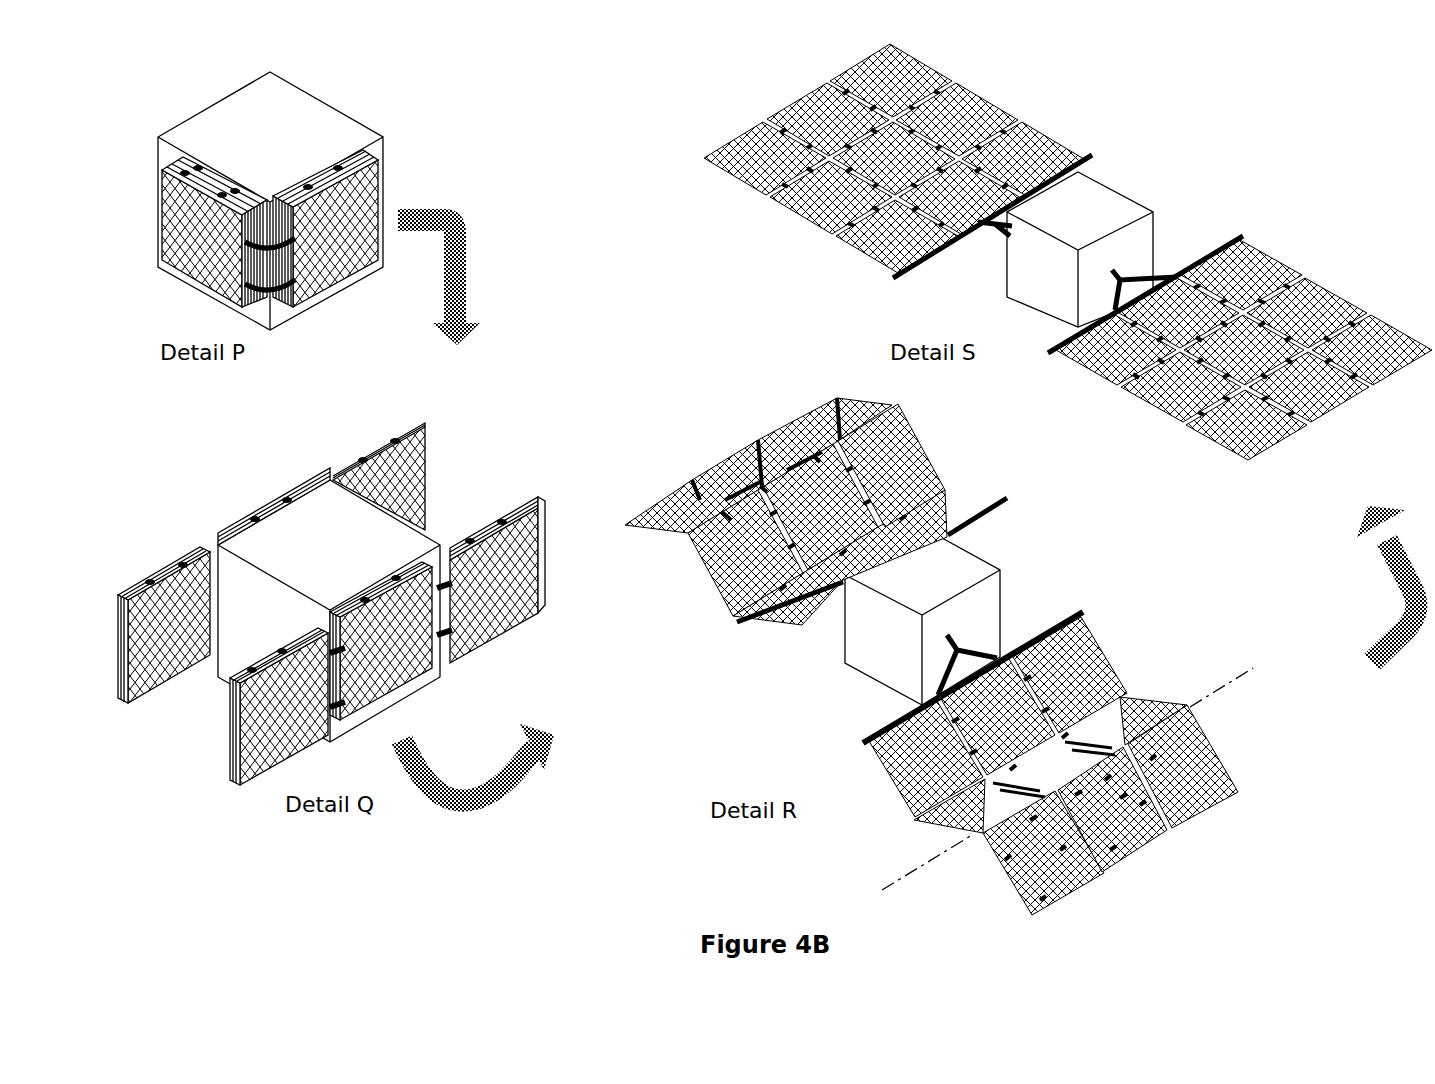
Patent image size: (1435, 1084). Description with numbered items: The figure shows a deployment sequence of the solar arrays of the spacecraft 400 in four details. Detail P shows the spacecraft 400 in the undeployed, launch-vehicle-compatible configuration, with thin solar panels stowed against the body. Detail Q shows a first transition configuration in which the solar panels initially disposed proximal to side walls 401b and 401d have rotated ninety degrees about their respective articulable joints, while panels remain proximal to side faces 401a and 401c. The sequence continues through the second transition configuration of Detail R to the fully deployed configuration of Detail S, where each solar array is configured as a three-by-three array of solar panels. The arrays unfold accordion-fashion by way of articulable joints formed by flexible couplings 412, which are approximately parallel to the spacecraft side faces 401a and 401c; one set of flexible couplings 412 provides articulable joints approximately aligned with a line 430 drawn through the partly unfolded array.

The spacecraft 400 is at (176, 78).
The side face 401a is at (970, 602).
The side face 401b is at (237, 657).
The side face 401c is at (325, 478).
The side face 401d is at (434, 538).
The flexible coupling 412 is at (1130, 748).
The line 430 is at (905, 872).